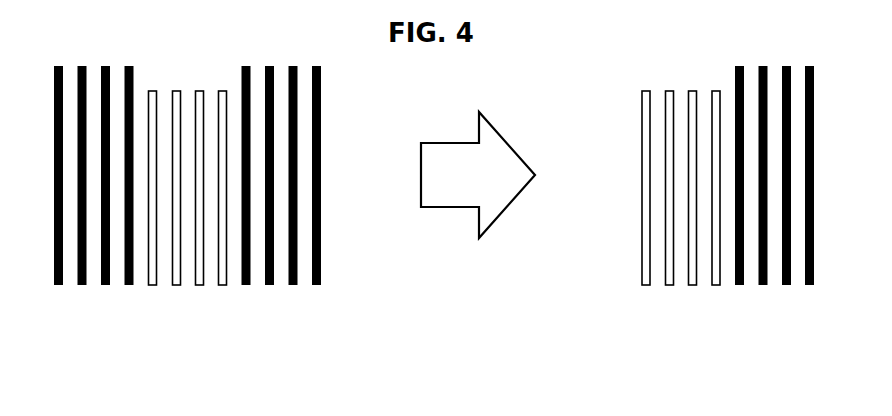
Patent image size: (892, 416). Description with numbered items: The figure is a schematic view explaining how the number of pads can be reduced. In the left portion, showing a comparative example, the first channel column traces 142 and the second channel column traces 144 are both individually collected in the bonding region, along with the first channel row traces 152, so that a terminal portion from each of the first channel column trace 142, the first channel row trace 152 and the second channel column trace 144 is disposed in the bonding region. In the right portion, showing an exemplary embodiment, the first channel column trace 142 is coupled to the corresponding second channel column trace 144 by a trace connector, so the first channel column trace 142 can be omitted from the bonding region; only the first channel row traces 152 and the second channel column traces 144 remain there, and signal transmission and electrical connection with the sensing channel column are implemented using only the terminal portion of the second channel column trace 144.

The first channel column trace 142 is at (55, 286).
The first channel row trace 152 is at (172, 286).
The second channel column trace 144 is at (290, 286).